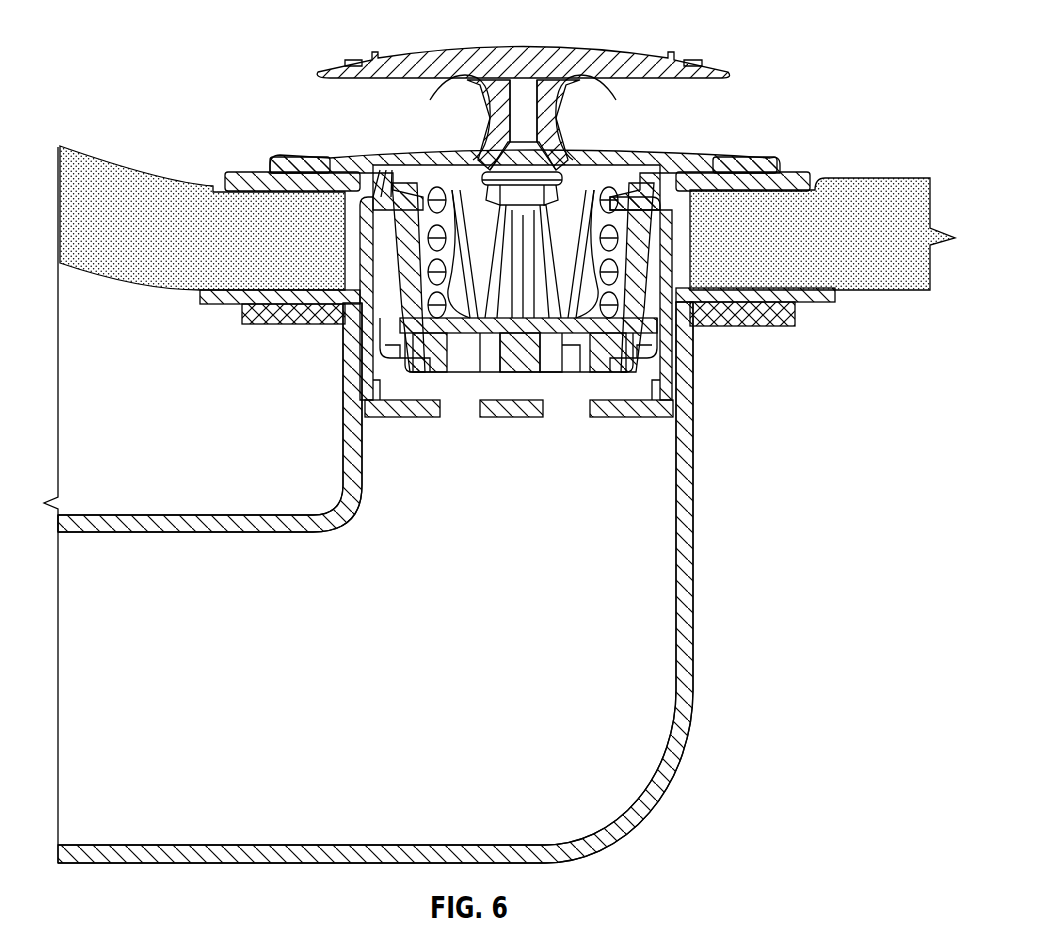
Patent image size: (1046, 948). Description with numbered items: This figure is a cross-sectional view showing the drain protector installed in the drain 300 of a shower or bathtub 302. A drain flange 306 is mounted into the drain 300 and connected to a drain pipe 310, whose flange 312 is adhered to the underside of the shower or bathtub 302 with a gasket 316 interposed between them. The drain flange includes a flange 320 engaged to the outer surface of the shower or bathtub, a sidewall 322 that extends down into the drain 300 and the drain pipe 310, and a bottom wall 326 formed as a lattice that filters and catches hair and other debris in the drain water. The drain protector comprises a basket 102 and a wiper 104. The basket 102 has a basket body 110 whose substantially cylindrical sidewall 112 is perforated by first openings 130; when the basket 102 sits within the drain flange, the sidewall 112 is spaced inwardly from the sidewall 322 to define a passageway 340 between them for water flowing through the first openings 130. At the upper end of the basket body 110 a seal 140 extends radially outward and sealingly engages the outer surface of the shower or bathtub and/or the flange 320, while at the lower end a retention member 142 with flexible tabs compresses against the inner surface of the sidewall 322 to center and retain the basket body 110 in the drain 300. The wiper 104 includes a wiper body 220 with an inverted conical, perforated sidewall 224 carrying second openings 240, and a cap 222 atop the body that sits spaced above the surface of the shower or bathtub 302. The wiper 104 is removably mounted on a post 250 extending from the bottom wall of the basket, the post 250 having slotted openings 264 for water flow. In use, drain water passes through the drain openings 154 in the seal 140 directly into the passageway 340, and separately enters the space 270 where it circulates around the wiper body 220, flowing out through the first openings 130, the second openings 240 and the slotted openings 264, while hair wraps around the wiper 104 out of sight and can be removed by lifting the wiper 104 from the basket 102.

The wiper 104 is at (322, 47).
The cap 222 is at (345, 66).
The basket body 110 is at (730, 50).
The shower or bathtub 302 is at (108, 146).
The drain flange 306 is at (245, 172).
The passageway 340 is at (393, 237).
The drain openings 154 is at (381, 166).
The sidewall 224 is at (426, 166).
The wiper body 220 is at (456, 162).
The space 270 is at (605, 165).
The second openings 240 is at (657, 153).
The seal 140 is at (745, 160).
The flange 320 is at (793, 168).
The drain 300 is at (682, 237).
The gasket 316 is at (200, 297).
The flange 312 is at (243, 315).
The sidewall 322 is at (360, 316).
The first openings 130 is at (362, 333).
The retention member 142 is at (378, 405).
The post 250 is at (490, 345).
The slotted opening 264 is at (522, 320).
The bottom wall 326 is at (512, 420).
The basket 102 is at (664, 262).
The sidewall 112 is at (702, 300).
The drain pipe 310 is at (695, 573).